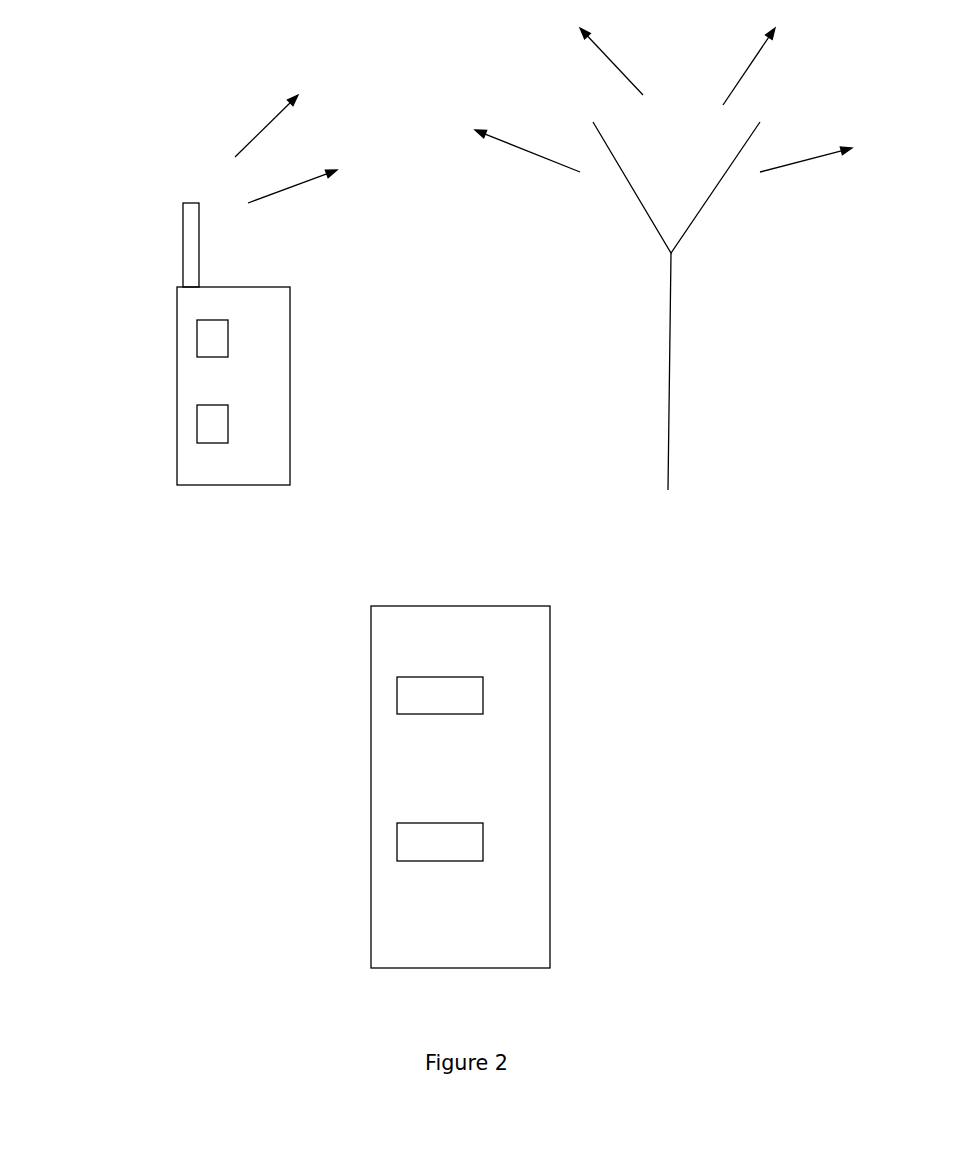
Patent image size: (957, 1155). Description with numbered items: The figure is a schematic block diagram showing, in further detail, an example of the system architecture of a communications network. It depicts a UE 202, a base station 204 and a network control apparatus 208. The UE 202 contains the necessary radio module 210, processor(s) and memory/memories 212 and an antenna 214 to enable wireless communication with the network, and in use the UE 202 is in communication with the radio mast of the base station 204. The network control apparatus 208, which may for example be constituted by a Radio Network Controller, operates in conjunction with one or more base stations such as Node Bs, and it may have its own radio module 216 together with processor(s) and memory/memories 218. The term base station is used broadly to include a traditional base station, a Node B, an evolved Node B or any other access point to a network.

The UE 202 is at (290, 405).
The base station 204 is at (672, 357).
The network control apparatus 208 is at (550, 772).
The radio module 210 is at (197, 425).
The processor(s) and memory/memories 212 is at (197, 340).
The antenna 214 is at (183, 257).
The radio module 216 is at (397, 845).
The processor(s) and memory/memories 218 is at (397, 700).